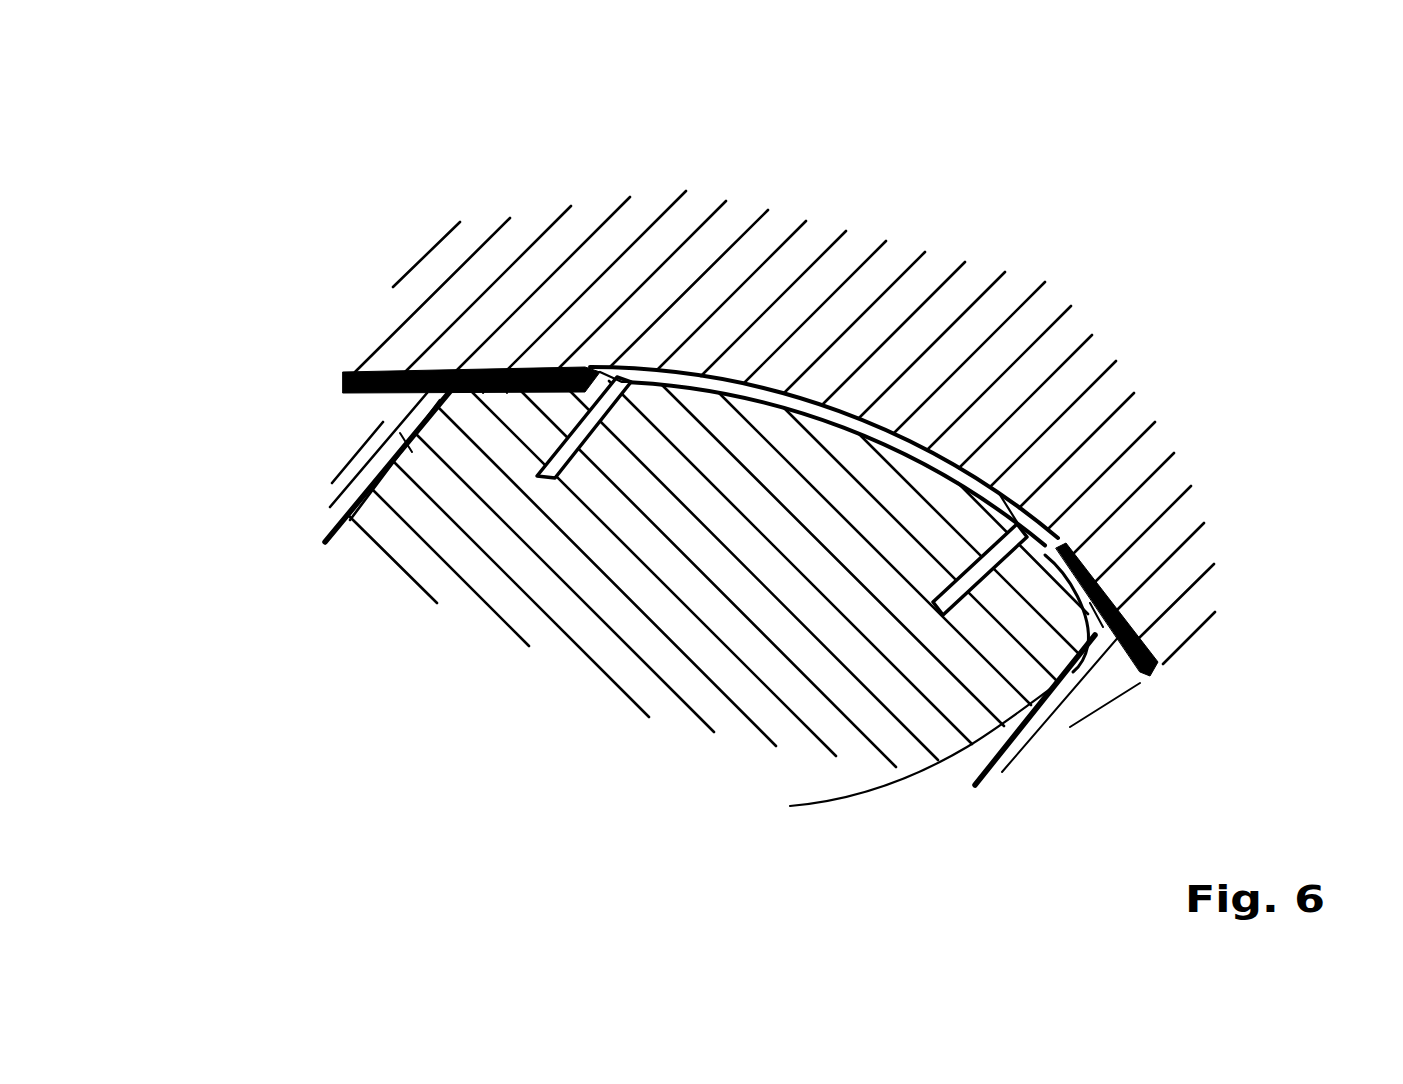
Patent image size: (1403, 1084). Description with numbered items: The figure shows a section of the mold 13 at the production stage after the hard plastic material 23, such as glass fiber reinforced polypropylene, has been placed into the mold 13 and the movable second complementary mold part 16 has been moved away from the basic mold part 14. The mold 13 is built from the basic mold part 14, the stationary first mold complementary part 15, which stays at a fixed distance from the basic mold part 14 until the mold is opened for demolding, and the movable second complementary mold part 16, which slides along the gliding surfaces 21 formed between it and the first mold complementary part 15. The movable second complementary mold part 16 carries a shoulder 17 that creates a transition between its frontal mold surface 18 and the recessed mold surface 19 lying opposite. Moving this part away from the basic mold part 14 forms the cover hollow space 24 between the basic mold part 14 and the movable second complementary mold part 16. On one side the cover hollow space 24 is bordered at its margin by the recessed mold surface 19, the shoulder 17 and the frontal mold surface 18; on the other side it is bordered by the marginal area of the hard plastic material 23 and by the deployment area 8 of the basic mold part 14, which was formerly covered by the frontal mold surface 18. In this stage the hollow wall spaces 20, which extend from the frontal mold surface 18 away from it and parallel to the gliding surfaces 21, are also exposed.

The deployment area 8 is at (790, 425).
The mold 13 is at (1102, 254).
The basic mold part 14 is at (868, 348).
The first mold complementary part 15 is at (358, 463).
The movable second complementary mold part 16 is at (1005, 470).
The shoulder 17 is at (600, 372).
The frontal mold surface 18 is at (915, 433).
The recessed mold surface 19 is at (483, 393).
The hollow wall spaces 20 is at (625, 382).
The gliding surfaces 21 is at (400, 433).
The hard plastic material 23 is at (343, 383).
The cover hollow space 24 is at (1057, 545).